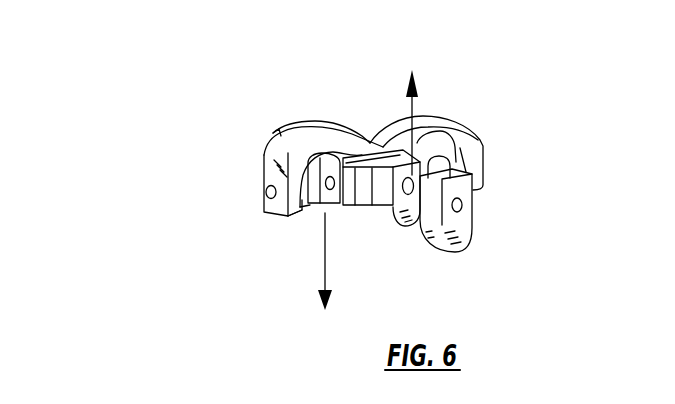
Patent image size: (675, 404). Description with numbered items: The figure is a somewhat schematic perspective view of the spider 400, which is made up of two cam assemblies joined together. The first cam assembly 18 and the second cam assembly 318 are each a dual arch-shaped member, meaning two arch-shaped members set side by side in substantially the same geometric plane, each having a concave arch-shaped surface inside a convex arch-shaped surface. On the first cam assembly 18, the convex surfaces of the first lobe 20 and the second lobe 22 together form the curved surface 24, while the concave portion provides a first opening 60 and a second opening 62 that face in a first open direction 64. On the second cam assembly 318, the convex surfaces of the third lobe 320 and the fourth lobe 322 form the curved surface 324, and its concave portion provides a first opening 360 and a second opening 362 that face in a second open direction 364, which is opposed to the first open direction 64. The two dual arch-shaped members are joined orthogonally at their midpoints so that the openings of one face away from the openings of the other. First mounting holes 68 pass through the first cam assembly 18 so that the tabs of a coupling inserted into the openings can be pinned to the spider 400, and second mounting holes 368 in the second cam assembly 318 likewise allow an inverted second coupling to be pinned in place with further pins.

The spider 400 is at (134, 114).
The first cam assembly 18 is at (261, 160).
The first lobe 20 is at (262, 133).
The second lobe 22 is at (457, 118).
The curved surface 24 is at (390, 120).
The first opening 60 is at (311, 212).
The second opening 62 is at (437, 150).
The first open direction 64 is at (320, 277).
The first mounting holes 68 is at (265, 191).
The second cam assembly 318 is at (473, 242).
The third lobe 320 is at (293, 214).
The fourth lobe 322 is at (322, 227).
The curved surface 324 is at (434, 269).
The first opening 360 is at (385, 212).
The second opening 362 is at (296, 112).
The second open direction 364 is at (406, 100).
The second mounting holes 368 is at (462, 205).